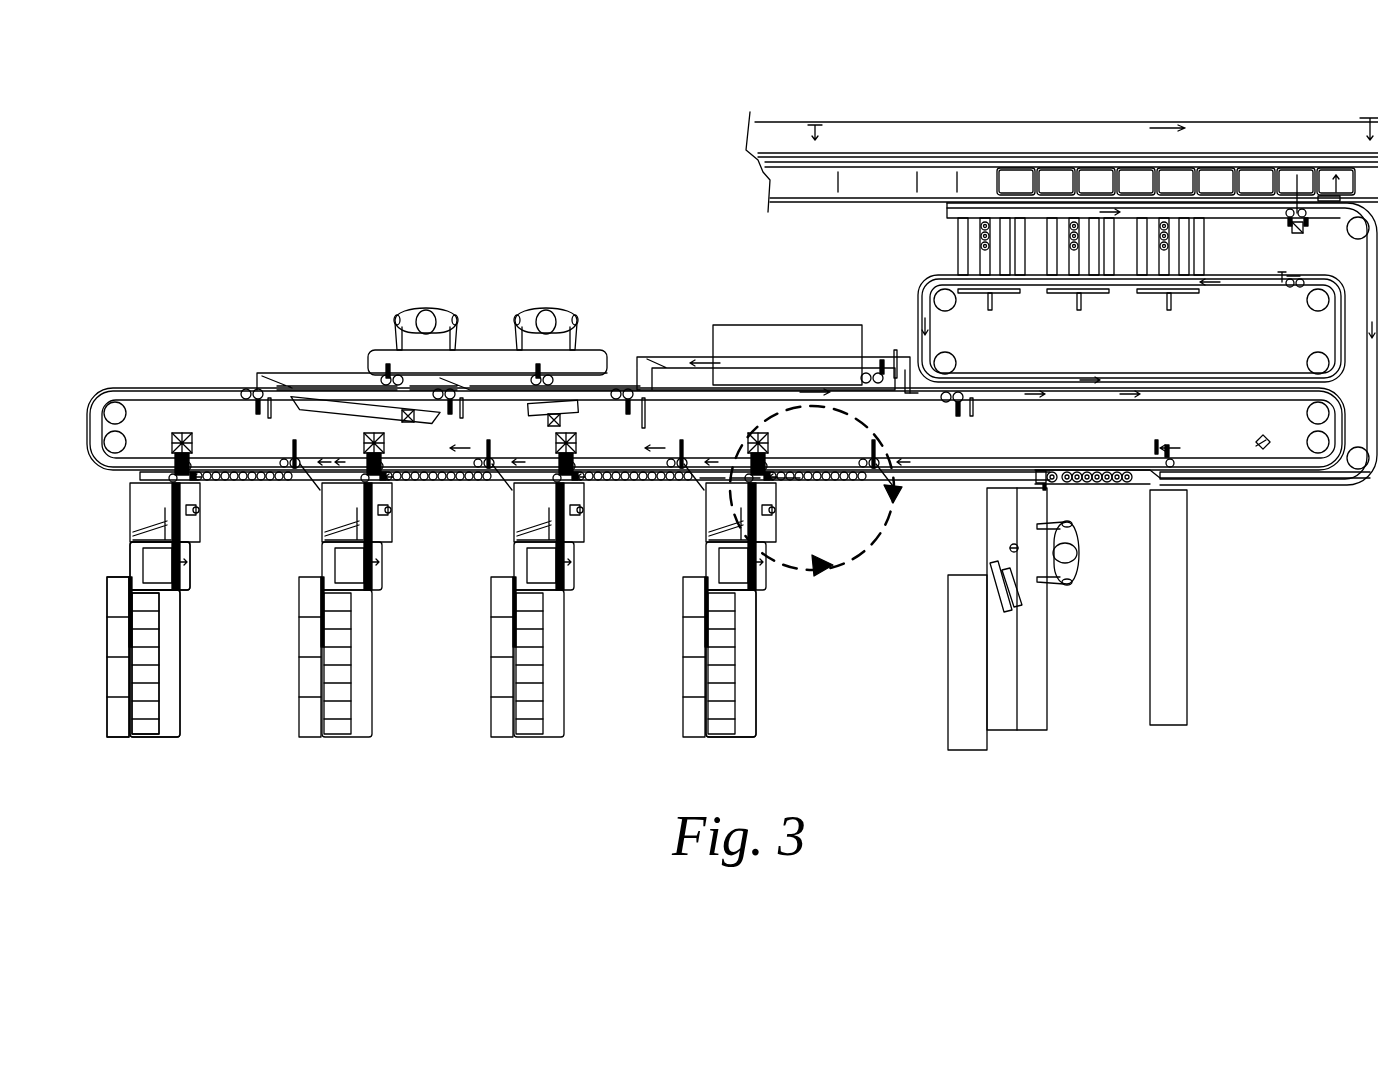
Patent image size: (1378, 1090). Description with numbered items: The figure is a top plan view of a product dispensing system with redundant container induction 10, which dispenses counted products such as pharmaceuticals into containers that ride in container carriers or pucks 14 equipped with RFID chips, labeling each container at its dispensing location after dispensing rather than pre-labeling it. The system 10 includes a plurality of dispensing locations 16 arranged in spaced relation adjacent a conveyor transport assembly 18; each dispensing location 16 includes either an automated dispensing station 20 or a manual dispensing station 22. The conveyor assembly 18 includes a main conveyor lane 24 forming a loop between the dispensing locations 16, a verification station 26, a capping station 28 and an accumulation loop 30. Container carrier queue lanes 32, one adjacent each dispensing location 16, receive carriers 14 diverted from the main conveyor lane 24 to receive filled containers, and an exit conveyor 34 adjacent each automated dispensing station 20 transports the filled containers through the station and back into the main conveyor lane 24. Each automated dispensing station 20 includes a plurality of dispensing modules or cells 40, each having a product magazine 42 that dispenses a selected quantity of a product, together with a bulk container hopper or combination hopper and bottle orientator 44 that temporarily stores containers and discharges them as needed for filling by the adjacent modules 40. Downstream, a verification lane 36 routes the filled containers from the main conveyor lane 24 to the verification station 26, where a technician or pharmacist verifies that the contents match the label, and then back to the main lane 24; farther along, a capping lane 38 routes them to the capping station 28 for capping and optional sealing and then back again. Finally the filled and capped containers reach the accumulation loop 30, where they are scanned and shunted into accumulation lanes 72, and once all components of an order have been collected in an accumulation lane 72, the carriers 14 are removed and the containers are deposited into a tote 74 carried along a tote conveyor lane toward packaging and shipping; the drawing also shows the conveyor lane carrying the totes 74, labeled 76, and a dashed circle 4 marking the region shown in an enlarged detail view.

The product dispensing system with redundant container induction 10 is at (585, 192).
The container carriers or pucks 14 is at (420, 482).
The dispensing locations 16 is at (215, 750).
The conveyor transport assembly 18 is at (1352, 492).
The automated dispensing station 20 is at (747, 660).
The manual dispensing station 22 is at (1035, 628).
The main conveyor lane 24 is at (1015, 455).
The verification station 26 is at (400, 298).
The capping station 28 is at (780, 325).
The accumulation loop 30 is at (1335, 327).
The container carrier queue lanes 32 is at (852, 483).
The exit conveyor 34 is at (190, 566).
The verification lane 36 is at (330, 373).
The capping lane 38 is at (668, 362).
The dispensing modules or cells 40 is at (152, 700).
The product magazine 42 is at (112, 598).
The bulk container hopper or combination hopper and bottle orientator 44 is at (150, 661).
The accumulation lanes 72 is at (1062, 272).
The tote 74 is at (1058, 180).
The overhead conveyor 76 is at (890, 178).
The detail view region 4 is at (816, 491).